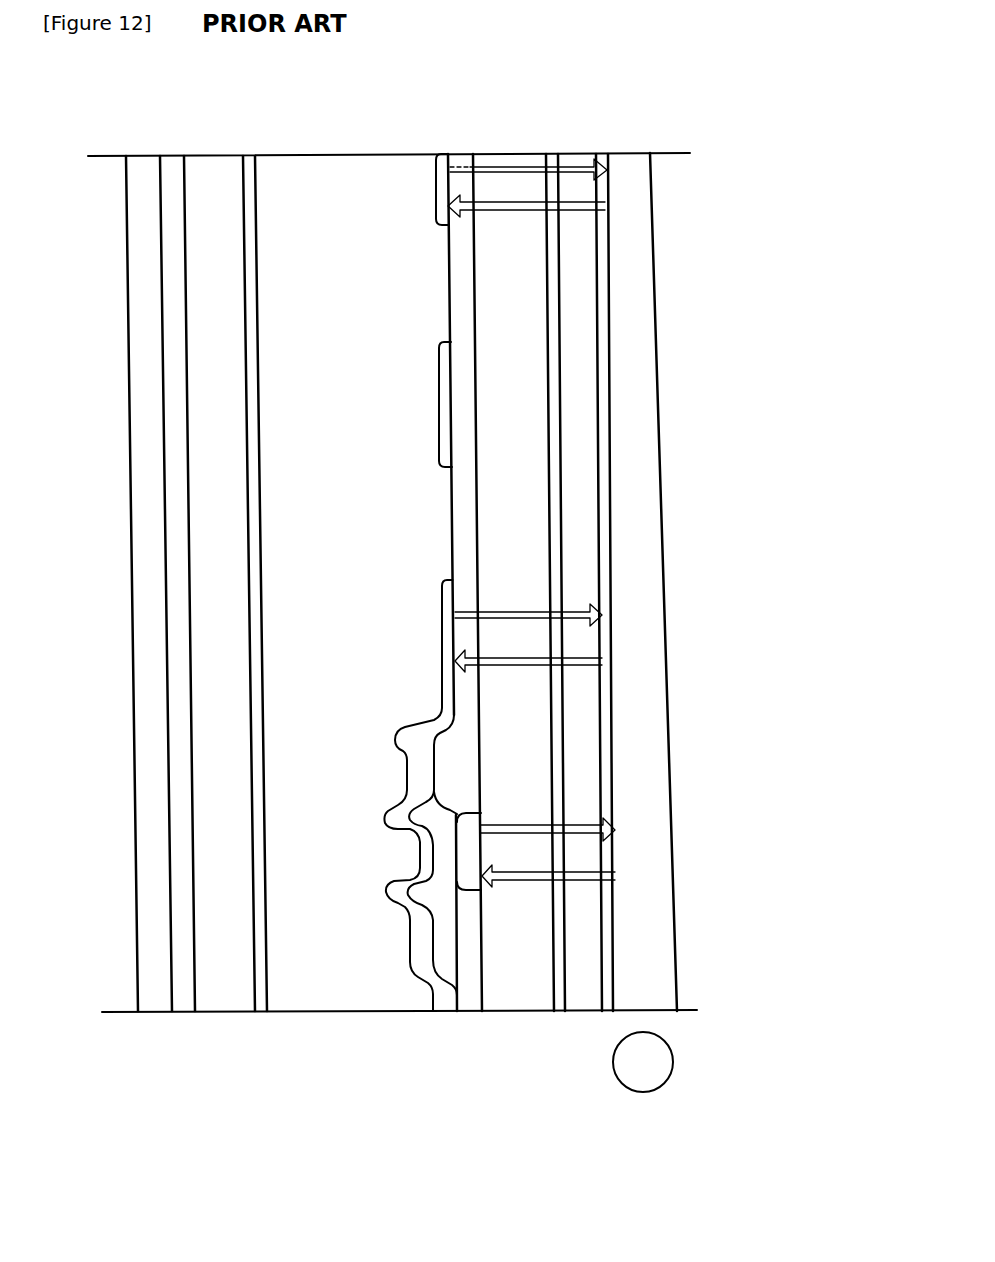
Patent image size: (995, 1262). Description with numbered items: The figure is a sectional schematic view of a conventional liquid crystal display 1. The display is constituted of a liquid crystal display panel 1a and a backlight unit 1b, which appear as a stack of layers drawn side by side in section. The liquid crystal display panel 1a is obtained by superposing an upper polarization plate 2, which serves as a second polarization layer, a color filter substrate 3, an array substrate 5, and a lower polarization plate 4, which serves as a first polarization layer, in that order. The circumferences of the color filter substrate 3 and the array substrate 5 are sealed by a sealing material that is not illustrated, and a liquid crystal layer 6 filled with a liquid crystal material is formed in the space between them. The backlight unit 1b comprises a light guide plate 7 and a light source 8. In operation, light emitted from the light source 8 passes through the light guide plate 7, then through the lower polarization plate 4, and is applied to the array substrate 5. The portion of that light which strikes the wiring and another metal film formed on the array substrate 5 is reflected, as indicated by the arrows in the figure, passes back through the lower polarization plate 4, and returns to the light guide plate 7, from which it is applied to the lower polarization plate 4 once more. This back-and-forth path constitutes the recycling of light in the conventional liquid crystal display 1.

The liquid crystal display 1 is at (685, 578).
The liquid crystal display panel 1a is at (138, 1072).
The backlight unit 1b is at (728, 1073).
The upper polarization plate 2 is at (160, 1013).
The color filter substrate 3 is at (243, 1013).
The lower polarization plate 4 is at (592, 1010).
The array substrate 5 is at (553, 1020).
The liquid crystal layer 6 is at (328, 1013).
The light guide plate 7 is at (660, 983).
The light source 8 is at (663, 1063).